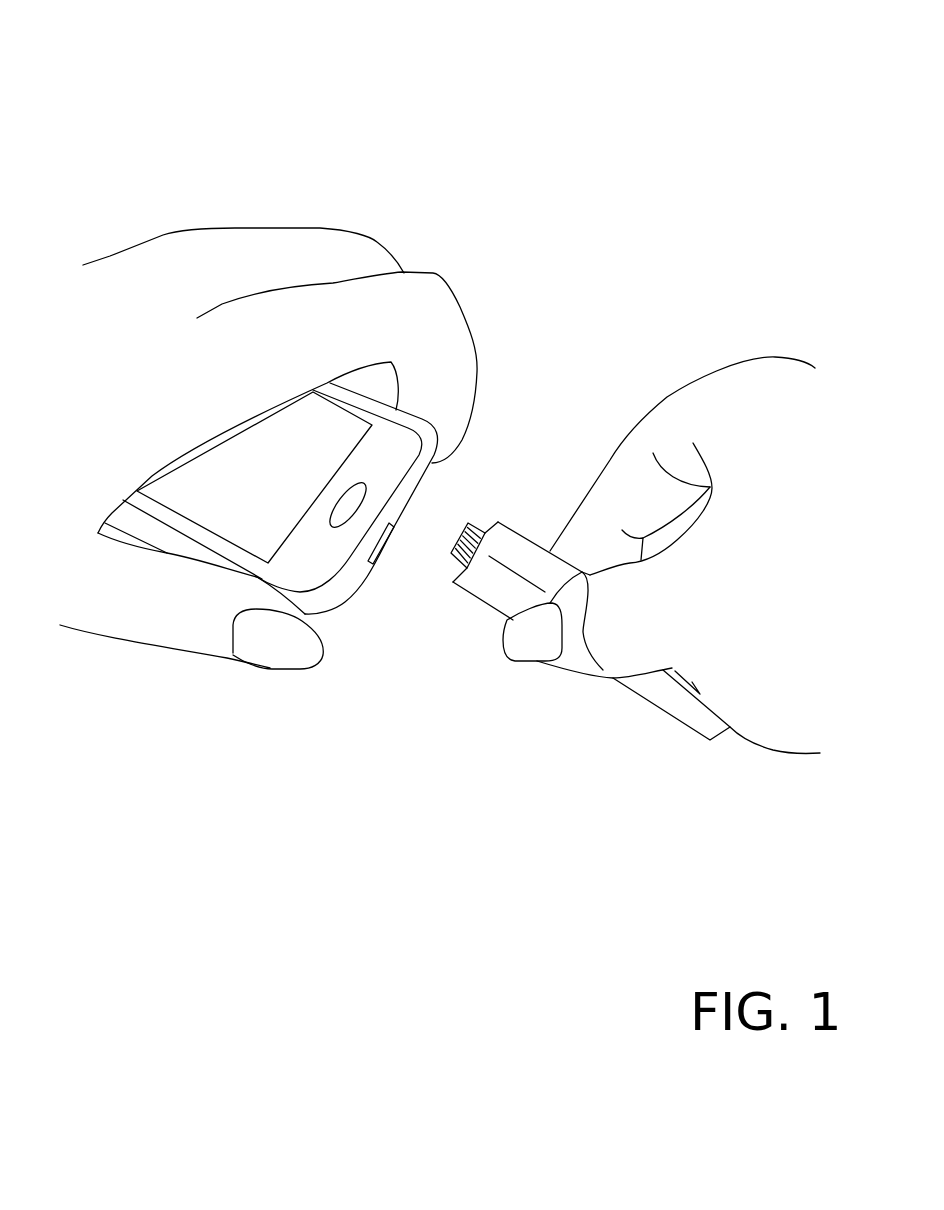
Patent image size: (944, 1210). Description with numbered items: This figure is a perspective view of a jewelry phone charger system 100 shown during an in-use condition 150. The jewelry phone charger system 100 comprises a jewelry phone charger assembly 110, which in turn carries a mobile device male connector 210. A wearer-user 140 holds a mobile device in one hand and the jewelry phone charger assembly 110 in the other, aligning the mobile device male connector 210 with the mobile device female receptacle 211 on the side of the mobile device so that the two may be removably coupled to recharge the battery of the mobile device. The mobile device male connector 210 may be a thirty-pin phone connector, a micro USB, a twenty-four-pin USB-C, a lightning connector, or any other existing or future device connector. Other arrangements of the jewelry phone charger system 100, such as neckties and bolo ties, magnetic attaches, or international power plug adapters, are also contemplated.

The jewelry phone charger system 100 is at (583, 90).
The jewelry phone charger assembly 110 is at (630, 714).
The wearer-user 140 is at (302, 248).
The in-use condition 150 is at (618, 120).
The mobile device male connector 210 is at (475, 523).
The mobile device female receptacle 211 is at (386, 554).